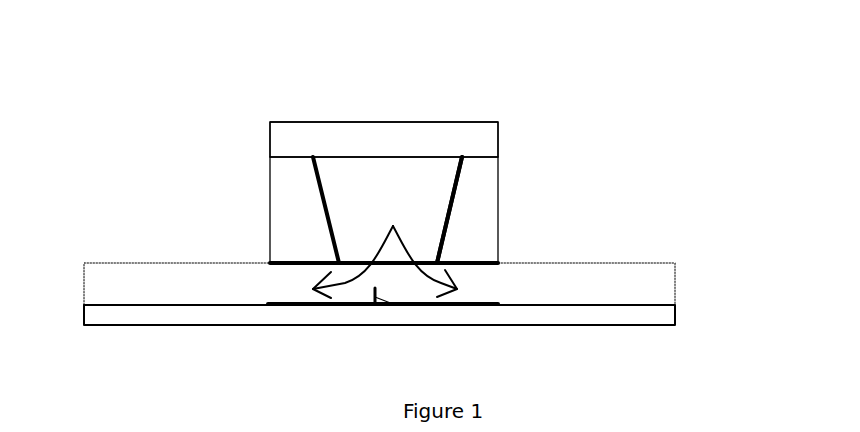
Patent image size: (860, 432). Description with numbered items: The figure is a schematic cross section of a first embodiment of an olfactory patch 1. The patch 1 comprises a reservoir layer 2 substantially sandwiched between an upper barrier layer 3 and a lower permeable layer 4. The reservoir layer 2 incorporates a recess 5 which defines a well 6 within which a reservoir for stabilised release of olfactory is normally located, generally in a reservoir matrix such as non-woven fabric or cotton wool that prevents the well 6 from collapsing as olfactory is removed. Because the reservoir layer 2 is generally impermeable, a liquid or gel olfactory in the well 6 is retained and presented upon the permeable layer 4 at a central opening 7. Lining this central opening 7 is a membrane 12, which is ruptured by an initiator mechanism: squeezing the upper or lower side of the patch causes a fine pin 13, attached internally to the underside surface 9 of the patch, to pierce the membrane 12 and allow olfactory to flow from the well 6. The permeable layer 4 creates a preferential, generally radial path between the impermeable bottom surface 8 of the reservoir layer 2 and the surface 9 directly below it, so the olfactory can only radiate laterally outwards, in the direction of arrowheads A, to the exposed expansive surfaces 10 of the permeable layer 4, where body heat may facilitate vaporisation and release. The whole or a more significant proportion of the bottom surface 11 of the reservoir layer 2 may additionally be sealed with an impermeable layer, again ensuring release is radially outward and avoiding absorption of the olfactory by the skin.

The olfactory patch 1 is at (551, 70).
The reservoir layer 2 is at (285, 200).
The barrier layer 3 is at (402, 138).
The permeable layer 4 is at (605, 280).
The recess 5 is at (448, 220).
The well 6 is at (349, 175).
The central opening 7 is at (391, 230).
The bottom surface 8 is at (303, 262).
The surface 9 is at (305, 310).
The exposed surfaces 10 is at (119, 280).
The bottom surface 11 is at (190, 315).
The membrane 12 is at (367, 262).
The fine pin 13 is at (393, 304).